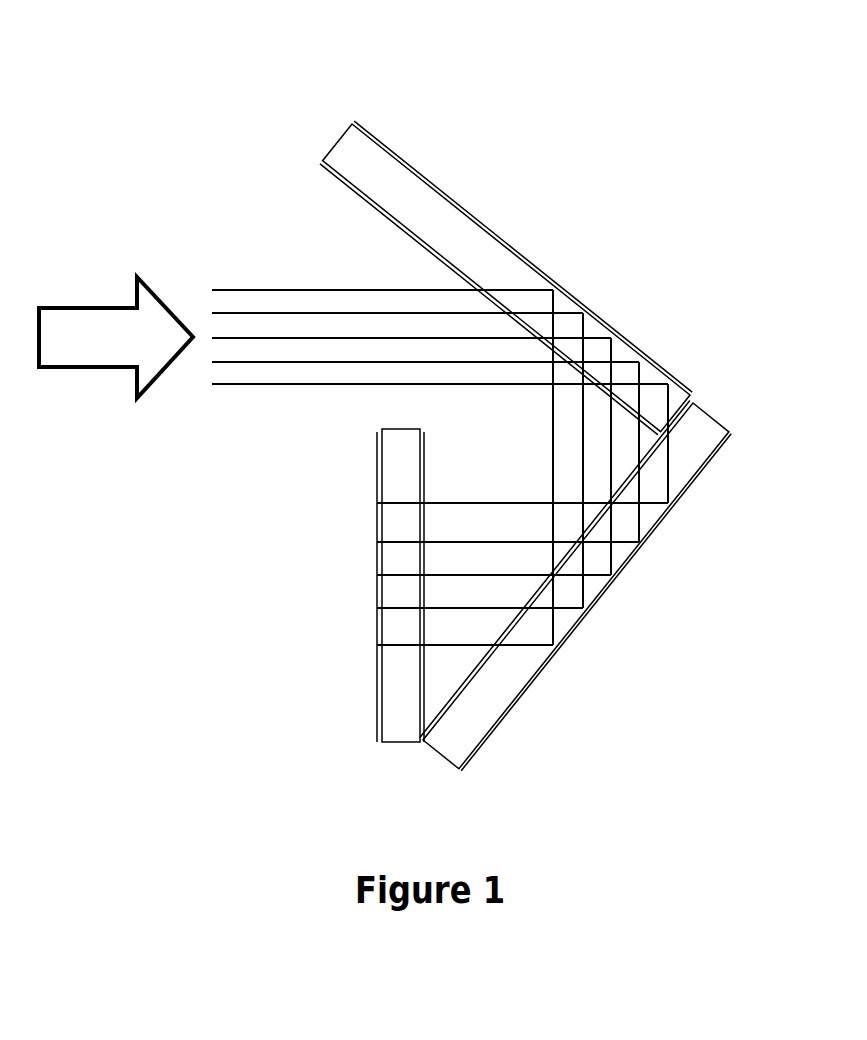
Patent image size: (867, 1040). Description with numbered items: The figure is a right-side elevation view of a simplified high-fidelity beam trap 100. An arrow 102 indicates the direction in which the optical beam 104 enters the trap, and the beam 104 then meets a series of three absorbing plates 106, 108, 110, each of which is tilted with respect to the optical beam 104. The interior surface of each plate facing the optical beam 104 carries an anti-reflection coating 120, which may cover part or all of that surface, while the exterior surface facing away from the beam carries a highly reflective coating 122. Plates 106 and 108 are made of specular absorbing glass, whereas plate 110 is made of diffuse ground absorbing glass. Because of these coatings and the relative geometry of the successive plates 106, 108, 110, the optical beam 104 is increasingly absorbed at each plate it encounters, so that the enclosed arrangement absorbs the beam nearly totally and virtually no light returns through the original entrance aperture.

The high-fidelity beam trap 100 is at (638, 162).
The input light direction arrow 102 is at (75, 303).
The optical beam 104 is at (230, 290).
The absorbing plate 106 is at (341, 150).
The absorbing plate 108 is at (710, 417).
The absorbing plate 110 is at (397, 743).
The anti-reflection coating 120 is at (325, 162).
The highly reflective coating 122 is at (633, 345).